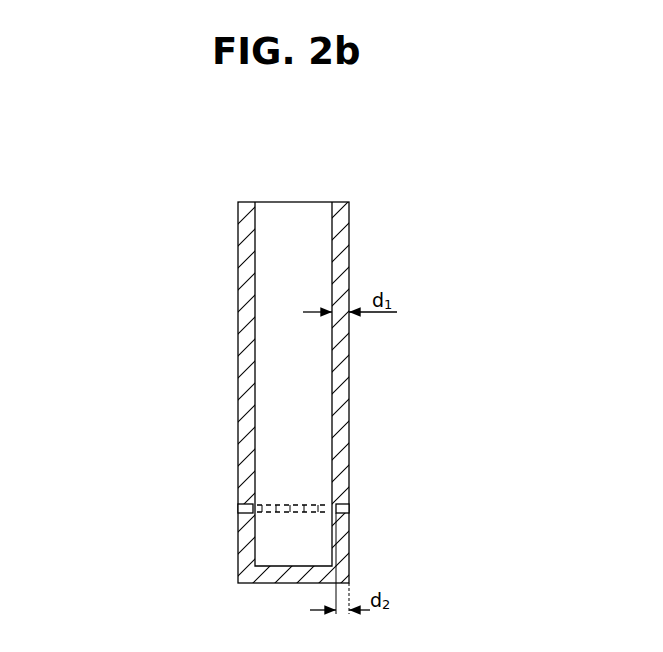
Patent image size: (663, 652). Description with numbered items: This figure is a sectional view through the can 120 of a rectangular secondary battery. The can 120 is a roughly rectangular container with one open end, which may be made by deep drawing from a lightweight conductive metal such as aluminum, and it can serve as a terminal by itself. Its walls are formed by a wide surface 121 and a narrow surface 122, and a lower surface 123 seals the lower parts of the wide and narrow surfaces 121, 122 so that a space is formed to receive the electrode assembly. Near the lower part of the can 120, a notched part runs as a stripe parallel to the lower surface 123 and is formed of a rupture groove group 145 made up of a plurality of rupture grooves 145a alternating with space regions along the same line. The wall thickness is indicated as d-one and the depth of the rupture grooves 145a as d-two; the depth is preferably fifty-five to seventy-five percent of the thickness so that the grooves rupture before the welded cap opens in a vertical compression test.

The can 120 is at (162, 165).
The wide surface 121 is at (250, 373).
The narrow surface 122 is at (294, 214).
The lower surface 123 is at (263, 577).
The rupture groove group 145 is at (350, 508).
The rupture groove 145a is at (236, 508).